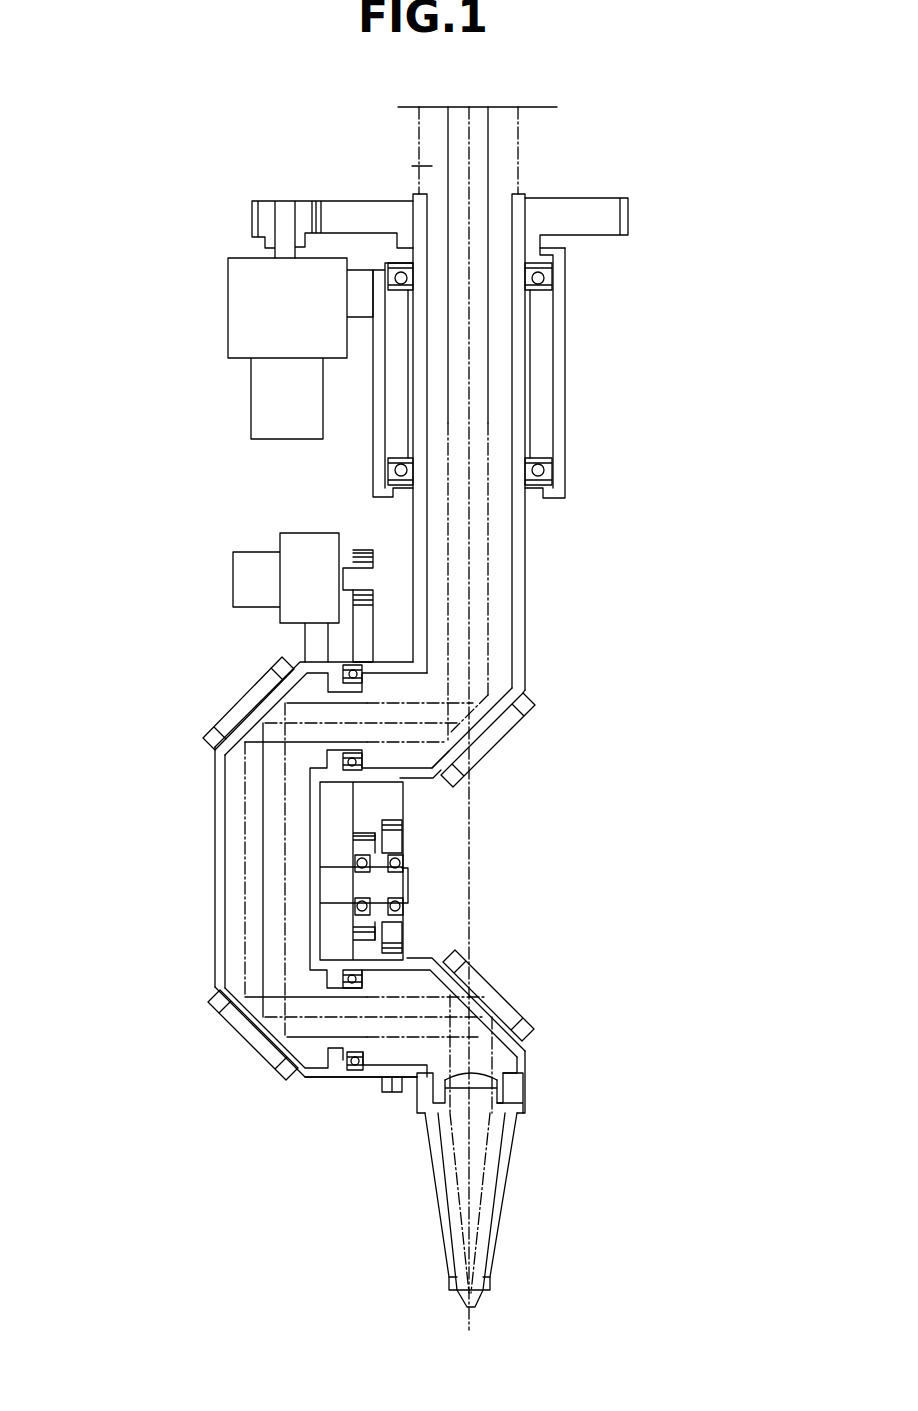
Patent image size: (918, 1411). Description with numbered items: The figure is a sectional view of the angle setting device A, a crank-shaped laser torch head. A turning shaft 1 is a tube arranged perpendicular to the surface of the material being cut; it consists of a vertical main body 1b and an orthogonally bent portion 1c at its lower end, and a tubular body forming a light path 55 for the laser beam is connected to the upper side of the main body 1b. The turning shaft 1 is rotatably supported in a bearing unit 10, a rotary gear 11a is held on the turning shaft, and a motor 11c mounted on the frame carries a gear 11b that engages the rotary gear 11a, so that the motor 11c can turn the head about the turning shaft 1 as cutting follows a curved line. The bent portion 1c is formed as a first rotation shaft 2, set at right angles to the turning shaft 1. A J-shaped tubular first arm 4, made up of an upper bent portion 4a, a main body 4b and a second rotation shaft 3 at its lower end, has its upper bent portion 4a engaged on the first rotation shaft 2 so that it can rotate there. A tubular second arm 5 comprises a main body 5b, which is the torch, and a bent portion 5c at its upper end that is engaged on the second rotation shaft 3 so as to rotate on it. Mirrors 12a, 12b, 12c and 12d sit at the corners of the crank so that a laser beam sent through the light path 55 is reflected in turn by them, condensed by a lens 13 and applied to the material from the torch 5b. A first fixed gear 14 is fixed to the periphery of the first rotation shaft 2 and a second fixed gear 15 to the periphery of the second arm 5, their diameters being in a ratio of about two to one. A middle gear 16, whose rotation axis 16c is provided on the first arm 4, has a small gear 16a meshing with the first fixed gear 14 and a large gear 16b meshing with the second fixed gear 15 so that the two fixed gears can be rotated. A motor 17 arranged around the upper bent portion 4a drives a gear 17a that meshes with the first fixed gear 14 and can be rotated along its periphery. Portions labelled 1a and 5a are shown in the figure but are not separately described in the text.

The turning shaft 1 is at (527, 541).
The lower spindle shaft portion 1a is at (472, 936).
The main body 1b is at (527, 614).
The bent portion 1c is at (400, 788).
The first rotation shaft 2 is at (410, 775).
The second rotation shaft 3 is at (312, 1088).
The first arm 4 is at (218, 915).
The upper bent portion 4a is at (318, 668).
The main body 4b is at (222, 810).
The second arm 5 is at (530, 1066).
The tapered tool shank 5a is at (472, 1170).
The main body (torch) 5b is at (446, 1218).
The bent portion 5c is at (410, 958).
The bearing unit 10 is at (558, 357).
The rotary gear 11a is at (575, 206).
The gear 11b is at (268, 204).
The motor 11c is at (243, 296).
The mirror 12a is at (503, 727).
The mirror 12b is at (236, 714).
The mirror 12c is at (245, 1030).
The mirror 12d is at (490, 1000).
The lens 13 is at (437, 1216).
The first fixed gear 14 is at (366, 630).
The second fixed gear 15 is at (392, 1093).
The middle gear 16 is at (420, 883).
The small gear 16a is at (310, 870).
The large gear 16b is at (400, 845).
The rotation axis 16c is at (318, 990).
The motor 17 is at (258, 562).
The gear 17a is at (358, 552).
The light path 55 is at (418, 166).
The angle setting device A is at (105, 887).